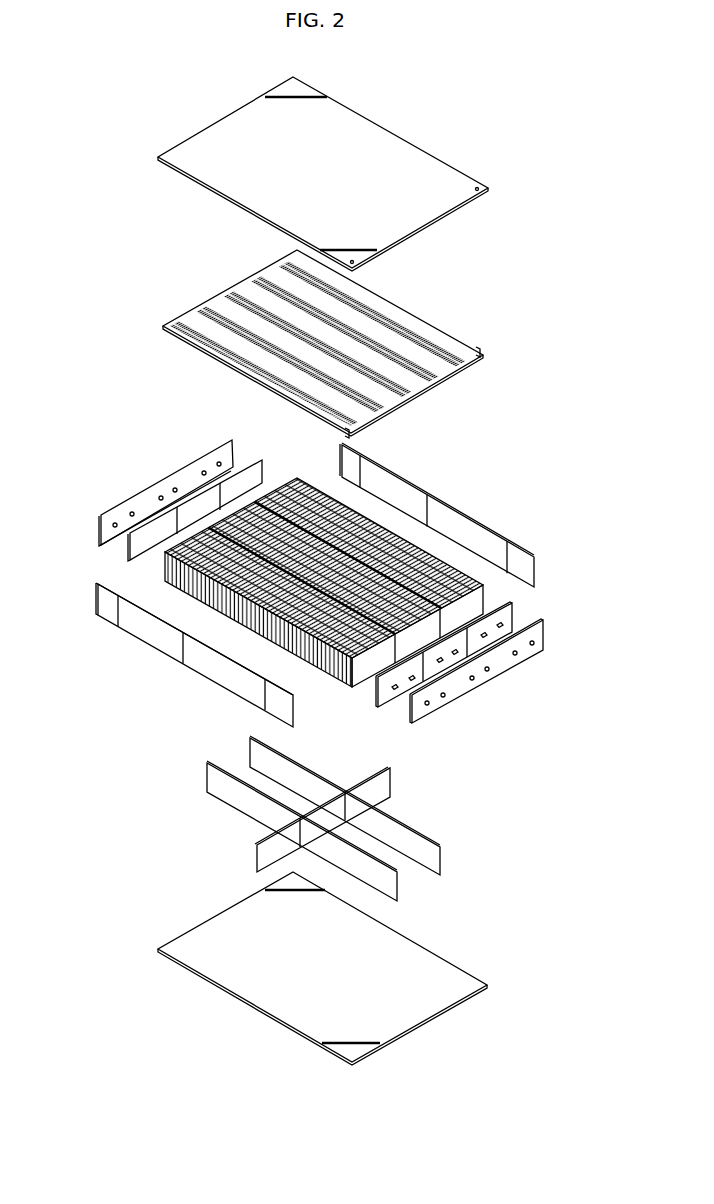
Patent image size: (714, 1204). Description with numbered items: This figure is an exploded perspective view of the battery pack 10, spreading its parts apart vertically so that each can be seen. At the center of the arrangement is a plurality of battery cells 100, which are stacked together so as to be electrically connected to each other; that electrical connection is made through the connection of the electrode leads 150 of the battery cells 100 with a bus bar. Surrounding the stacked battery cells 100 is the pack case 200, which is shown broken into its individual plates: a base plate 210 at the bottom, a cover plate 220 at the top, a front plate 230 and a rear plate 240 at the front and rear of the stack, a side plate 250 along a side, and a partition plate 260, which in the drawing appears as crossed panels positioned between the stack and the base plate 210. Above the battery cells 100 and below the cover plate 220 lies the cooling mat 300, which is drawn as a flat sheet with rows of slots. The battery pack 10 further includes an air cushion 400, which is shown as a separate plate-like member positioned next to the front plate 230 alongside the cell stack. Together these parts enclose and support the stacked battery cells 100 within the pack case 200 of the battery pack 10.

The battery pack 10 is at (85, 134).
The battery cell 100 is at (152, 579).
The electrode lead 150 is at (289, 482).
The pack case 200 is at (452, 128).
The base plate 210 is at (417, 957).
The cover plate 220 is at (393, 147).
The front plate 230 is at (490, 688).
The rear plate 240 is at (122, 468).
The side plate 250 is at (165, 666).
The partition plate 260 is at (404, 776).
The cooling mat 300 is at (418, 305).
The air cushion 400 is at (520, 611).